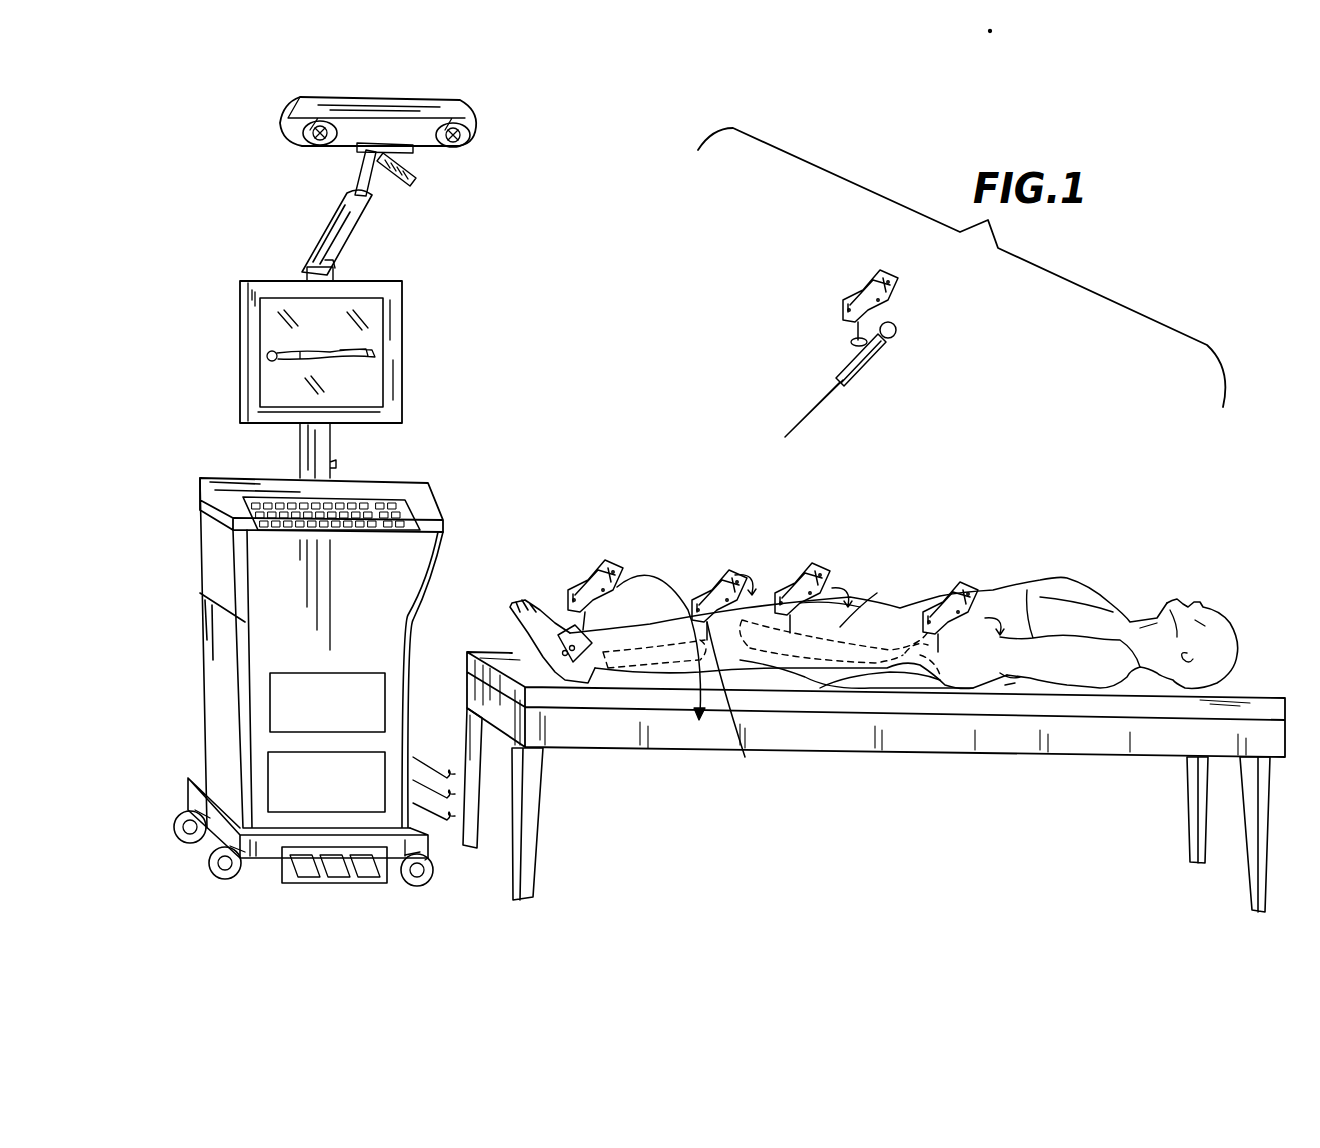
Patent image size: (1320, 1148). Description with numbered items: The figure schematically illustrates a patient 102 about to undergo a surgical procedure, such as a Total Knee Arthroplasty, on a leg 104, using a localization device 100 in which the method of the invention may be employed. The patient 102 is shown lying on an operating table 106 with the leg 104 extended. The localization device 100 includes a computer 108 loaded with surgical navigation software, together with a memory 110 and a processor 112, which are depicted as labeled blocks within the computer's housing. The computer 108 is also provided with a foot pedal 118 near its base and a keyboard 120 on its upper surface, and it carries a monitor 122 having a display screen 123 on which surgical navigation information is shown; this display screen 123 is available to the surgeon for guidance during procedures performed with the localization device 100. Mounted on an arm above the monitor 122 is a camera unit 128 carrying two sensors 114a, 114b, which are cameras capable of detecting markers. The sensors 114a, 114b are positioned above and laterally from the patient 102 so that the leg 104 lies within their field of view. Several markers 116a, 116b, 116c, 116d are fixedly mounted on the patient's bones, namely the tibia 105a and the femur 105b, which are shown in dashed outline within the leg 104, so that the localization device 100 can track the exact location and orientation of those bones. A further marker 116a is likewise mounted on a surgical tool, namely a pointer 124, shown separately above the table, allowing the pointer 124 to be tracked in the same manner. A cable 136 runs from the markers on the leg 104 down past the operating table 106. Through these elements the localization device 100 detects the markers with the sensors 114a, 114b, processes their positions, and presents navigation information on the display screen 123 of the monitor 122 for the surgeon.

The localization device 100 is at (232, 266).
The patient 102 is at (874, 638).
The leg 104 is at (838, 572).
The tibia 105a is at (660, 675).
The femur 105b is at (792, 660).
The operating table 106 is at (1237, 682).
The computer 108 is at (220, 627).
The memory 110 is at (270, 770).
The processor 112 is at (270, 715).
The sensor 114a is at (318, 142).
The sensor 114b is at (460, 124).
The marker 116a is at (577, 607).
The marker 116b is at (700, 580).
The marker 116c is at (790, 565).
The marker 116d is at (935, 590).
The foot pedal 118 is at (313, 855).
The keyboard 120 is at (420, 510).
The monitor 122 is at (318, 352).
The display screen 123 is at (373, 382).
The pointer 124 is at (865, 367).
The camera unit 128 is at (387, 189).
The cable 136 is at (697, 686).